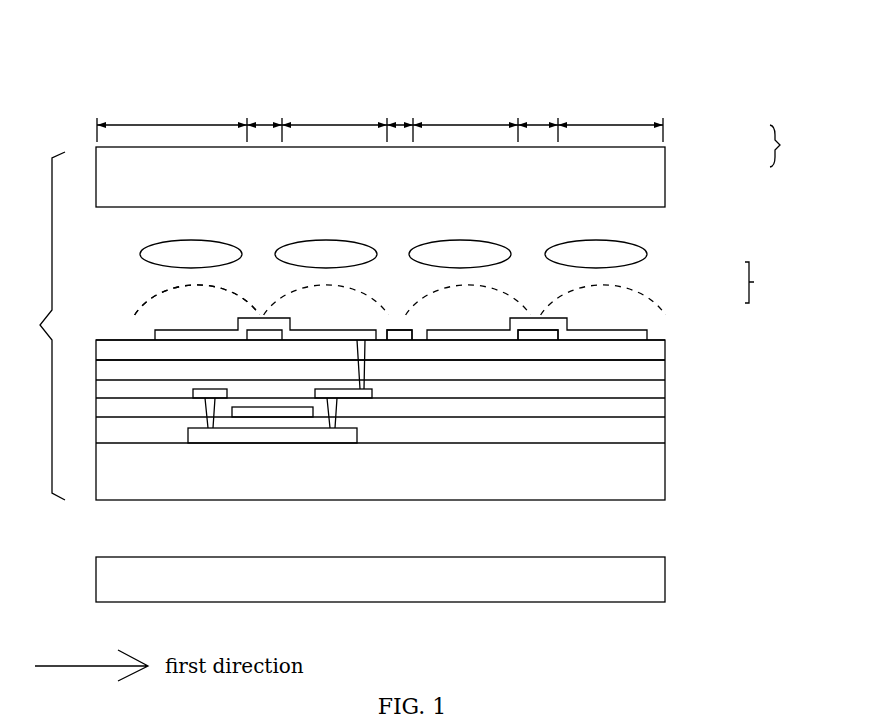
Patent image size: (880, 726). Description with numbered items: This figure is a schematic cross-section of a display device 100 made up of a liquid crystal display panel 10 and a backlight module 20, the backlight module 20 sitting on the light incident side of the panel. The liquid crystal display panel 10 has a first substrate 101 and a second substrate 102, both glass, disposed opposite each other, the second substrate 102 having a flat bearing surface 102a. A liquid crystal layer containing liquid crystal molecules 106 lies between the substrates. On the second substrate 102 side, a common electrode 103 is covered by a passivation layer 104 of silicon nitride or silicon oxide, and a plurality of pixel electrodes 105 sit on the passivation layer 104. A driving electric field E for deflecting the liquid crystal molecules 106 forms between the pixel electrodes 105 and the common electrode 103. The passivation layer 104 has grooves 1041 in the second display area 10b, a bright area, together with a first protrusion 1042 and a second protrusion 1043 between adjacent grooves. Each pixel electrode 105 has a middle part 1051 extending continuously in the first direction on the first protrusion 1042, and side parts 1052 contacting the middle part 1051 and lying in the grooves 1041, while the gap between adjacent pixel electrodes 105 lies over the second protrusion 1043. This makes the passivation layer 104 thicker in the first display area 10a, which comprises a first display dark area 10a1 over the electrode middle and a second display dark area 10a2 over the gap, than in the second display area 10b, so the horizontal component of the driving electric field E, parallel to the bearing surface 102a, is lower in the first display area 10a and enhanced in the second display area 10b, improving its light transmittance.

The display device 100 is at (370, 55).
The liquid crystal display panel 10 is at (41, 326).
The first substrate 101 is at (632, 182).
The first display area 10a is at (787, 146).
The first display dark area 10a1 is at (505, 223).
The second display dark area 10a2 is at (574, 223).
The second display area 10b is at (380, 124).
The liquid crystal molecules 106 is at (622, 253).
The pixel electrode 105 is at (772, 282).
The middle part 1051 is at (522, 317).
The side parts 1052 is at (595, 336).
The groove 1041 is at (657, 333).
The passivation layer 104 is at (658, 348).
The common electrode 103 is at (659, 371).
The bearing surface 102a is at (655, 440).
The second substrate 102 is at (658, 472).
The second protrusion 1043 is at (402, 335).
The first protrusion 1042 is at (533, 338).
The backlight module 20 is at (120, 584).
The driving electric field E is at (152, 302).